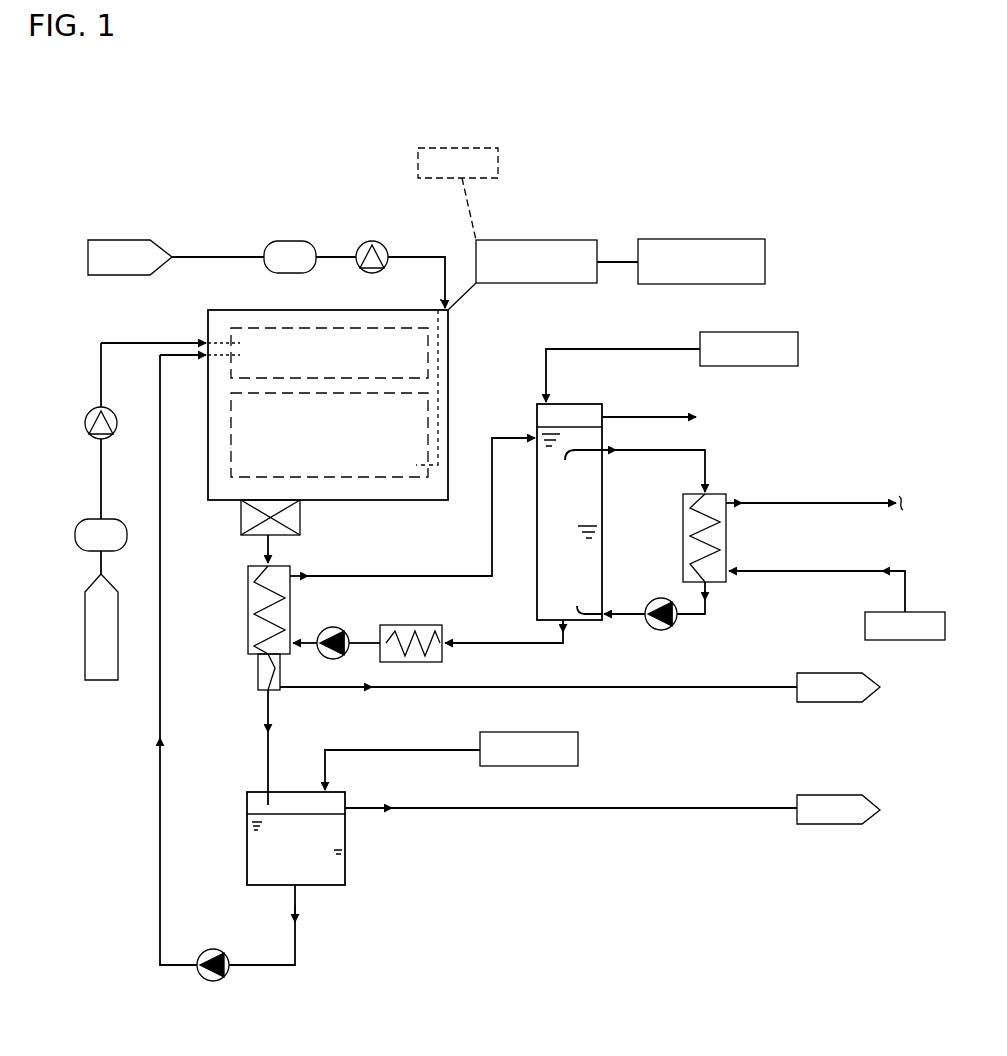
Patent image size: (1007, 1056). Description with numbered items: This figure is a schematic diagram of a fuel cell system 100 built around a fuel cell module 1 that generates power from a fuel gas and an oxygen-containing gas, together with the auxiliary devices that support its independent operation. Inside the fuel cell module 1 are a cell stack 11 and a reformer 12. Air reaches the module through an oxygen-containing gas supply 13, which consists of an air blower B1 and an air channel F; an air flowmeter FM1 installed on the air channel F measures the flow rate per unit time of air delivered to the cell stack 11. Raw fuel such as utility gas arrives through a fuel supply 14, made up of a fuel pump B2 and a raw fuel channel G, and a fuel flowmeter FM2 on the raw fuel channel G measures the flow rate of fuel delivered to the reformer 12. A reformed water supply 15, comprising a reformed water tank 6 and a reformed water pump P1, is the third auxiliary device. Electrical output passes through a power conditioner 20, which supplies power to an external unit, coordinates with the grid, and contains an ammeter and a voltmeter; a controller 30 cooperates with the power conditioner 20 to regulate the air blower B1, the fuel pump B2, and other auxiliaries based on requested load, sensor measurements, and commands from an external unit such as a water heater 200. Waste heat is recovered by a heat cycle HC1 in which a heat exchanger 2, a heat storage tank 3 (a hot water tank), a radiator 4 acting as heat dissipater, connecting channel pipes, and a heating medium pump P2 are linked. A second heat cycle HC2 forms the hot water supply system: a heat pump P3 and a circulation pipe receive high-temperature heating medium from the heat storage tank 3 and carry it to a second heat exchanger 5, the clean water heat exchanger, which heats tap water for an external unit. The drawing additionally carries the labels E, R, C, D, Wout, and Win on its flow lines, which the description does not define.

The fuel cell system 100 is at (338, 192).
The water heater 200 is at (418, 150).
The oxygen-containing gas supply 13 is at (190, 226).
The fuel supply 14 is at (100, 342).
The fuel cell module 1 is at (204, 318).
The cell stack 11 is at (329, 435).
The reformer 12 is at (329, 353).
The heat exchanger 2 is at (246, 606).
The heat storage tank 3 is at (576, 508).
The radiator 4 is at (410, 625).
The second heat exchanger 5 is at (682, 544).
The reformed water tank 6 is at (306, 866).
The reformed water supply 15 is at (320, 904).
The power conditioner 20 is at (534, 238).
The controller 30 is at (702, 238).
The air blower B1 is at (376, 243).
The fuel pump B2 is at (90, 410).
The air flowmeter FM1 is at (290, 257).
The fuel flowmeter FM2 is at (101, 535).
The reformed water pump P1 is at (212, 948).
The heating medium pump P2 is at (334, 627).
The heat pump P3 is at (672, 626).
The air channel F is at (229, 257).
The raw fuel channel G is at (102, 490).
The exhaust gas flow E is at (272, 546).
The recirculated water flow R is at (162, 656).
The condensed water flow C is at (266, 762).
The drain / overflow water D is at (628, 809).
The heat cycle HC1 is at (490, 516).
The heat cycle HC2 is at (706, 462).
The heated water outlet Wout is at (824, 502).
The tap water inlet Win is at (824, 574).